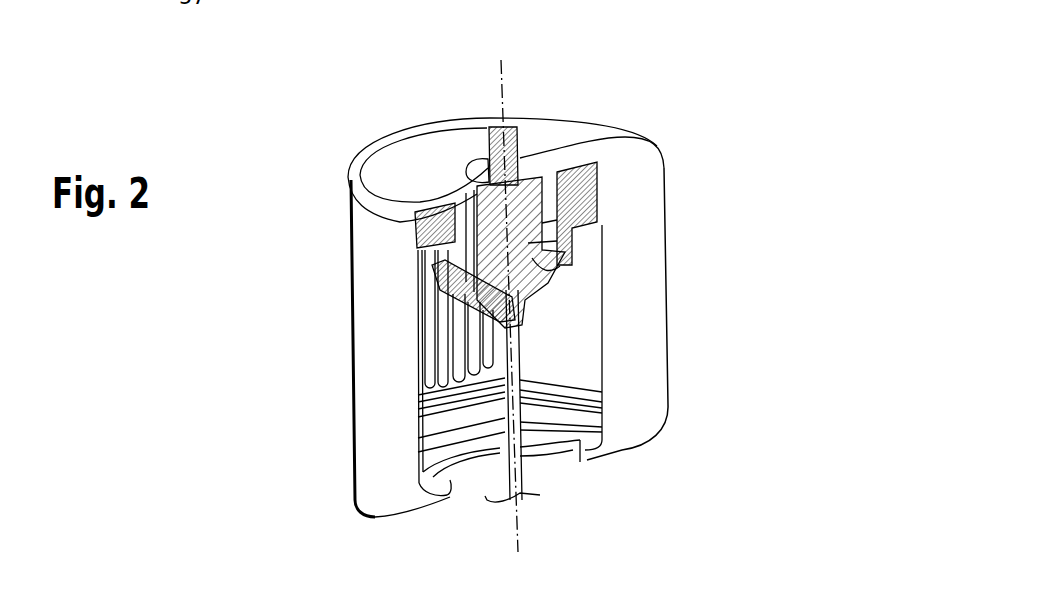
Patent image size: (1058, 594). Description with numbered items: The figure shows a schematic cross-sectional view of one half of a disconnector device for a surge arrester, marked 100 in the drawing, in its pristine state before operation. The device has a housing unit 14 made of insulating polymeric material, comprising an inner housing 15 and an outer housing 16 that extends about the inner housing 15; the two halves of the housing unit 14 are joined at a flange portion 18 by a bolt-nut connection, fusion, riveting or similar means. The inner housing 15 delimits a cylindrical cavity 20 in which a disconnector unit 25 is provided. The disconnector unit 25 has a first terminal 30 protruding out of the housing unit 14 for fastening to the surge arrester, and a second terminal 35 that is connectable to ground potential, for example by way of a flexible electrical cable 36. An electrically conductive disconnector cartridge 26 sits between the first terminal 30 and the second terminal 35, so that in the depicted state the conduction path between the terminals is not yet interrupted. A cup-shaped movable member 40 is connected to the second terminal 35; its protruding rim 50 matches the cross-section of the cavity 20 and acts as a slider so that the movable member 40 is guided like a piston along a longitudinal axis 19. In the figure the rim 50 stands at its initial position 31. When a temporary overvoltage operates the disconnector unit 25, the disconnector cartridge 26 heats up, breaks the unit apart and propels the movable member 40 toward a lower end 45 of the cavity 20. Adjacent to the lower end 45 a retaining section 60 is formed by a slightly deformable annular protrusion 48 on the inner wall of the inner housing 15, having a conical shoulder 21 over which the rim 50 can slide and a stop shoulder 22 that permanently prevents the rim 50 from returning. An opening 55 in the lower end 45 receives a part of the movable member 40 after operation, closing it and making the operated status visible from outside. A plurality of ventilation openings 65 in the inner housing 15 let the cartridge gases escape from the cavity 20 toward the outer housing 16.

The exhaust gas treatment device 100 is at (843, 89).
The longitudinal axis 19 is at (500, 64).
The housing unit 14 is at (423, 125).
The outer housing 16 is at (368, 152).
The first terminal 30 is at (520, 136).
The rim 50 is at (520, 156).
The movable member 40 is at (580, 226).
The initial position 31 is at (405, 228).
The flange portion 18 is at (382, 254).
The disconnector cartridge 26 is at (572, 250).
The cavity 20 is at (580, 308).
The disconnector unit 25 is at (433, 267).
The ventilation openings 65 is at (432, 302).
The second terminal 35 is at (502, 328).
The inner housing 15 is at (583, 347).
The annular protrusion 48 is at (608, 397).
The retaining section 60 is at (608, 429).
The conical shoulder 21 is at (418, 440).
The stop shoulder 22 is at (420, 467).
The opening 55 is at (557, 468).
The electrical cable 36 is at (540, 495).
The lower end 45 is at (475, 484).